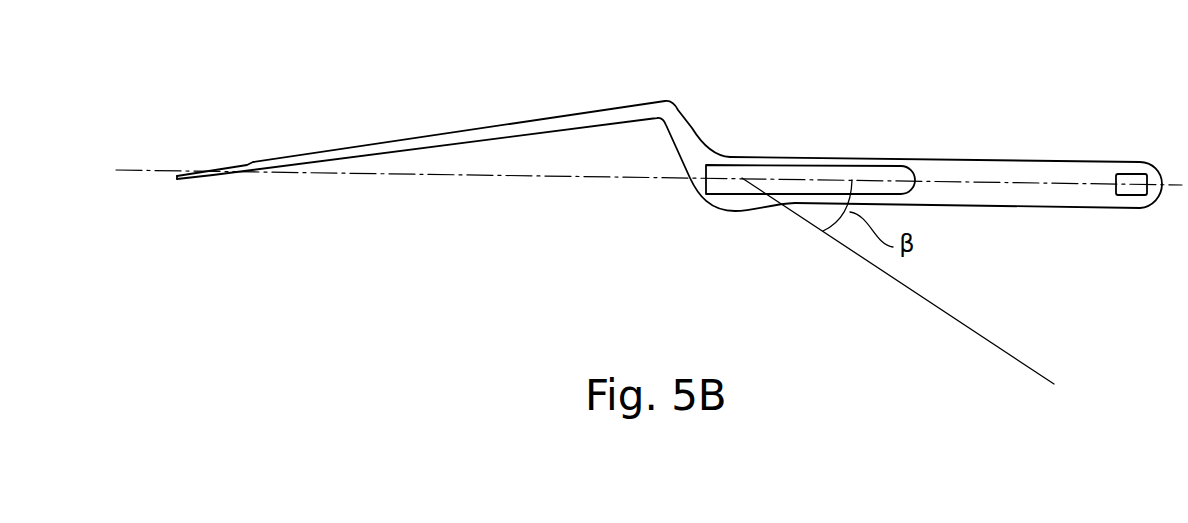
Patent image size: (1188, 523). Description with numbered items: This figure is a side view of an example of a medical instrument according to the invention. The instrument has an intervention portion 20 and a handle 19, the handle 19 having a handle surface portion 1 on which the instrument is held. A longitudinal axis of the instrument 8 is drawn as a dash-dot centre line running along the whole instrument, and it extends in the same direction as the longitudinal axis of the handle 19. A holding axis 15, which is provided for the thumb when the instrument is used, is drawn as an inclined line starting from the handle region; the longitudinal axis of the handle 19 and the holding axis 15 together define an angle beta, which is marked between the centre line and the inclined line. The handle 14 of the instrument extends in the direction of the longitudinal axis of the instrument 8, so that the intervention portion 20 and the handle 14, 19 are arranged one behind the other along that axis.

The handle surface portion 1 is at (669, 166).
The longitudinal axis of the instrument 8 is at (157, 170).
The handle 14 is at (1028, 195).
The holding axis 15 is at (1028, 363).
The handle 19 is at (937, 182).
The intervention portion 20 is at (483, 132).